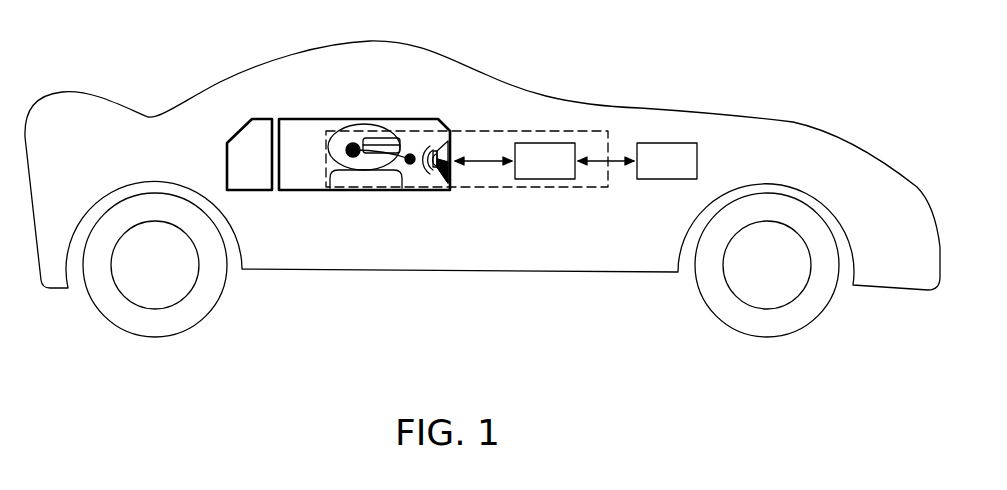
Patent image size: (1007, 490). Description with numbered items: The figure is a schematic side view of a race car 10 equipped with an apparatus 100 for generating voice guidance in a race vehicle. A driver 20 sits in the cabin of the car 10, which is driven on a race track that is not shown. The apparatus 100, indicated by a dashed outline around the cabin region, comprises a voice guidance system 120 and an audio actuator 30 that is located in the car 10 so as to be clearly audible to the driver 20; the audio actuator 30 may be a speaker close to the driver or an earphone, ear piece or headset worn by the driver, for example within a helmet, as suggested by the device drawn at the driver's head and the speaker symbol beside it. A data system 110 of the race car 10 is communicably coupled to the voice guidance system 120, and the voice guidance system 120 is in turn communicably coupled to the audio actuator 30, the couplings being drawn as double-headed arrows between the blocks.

The race car 10 is at (437, 269).
The driver 20 is at (330, 181).
The audio actuator 30 is at (353, 152).
The apparatus for generating voice guidance 100 is at (523, 188).
The data system 110 is at (645, 171).
The voice guidance system 120 is at (523, 171).